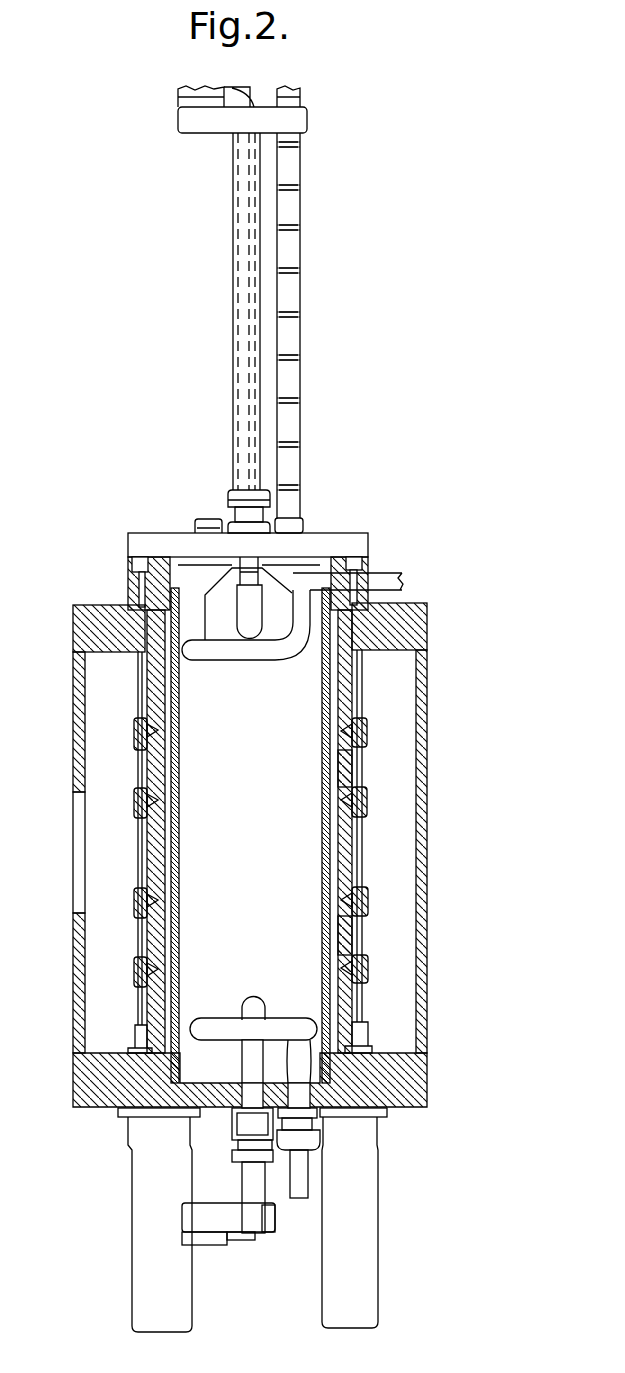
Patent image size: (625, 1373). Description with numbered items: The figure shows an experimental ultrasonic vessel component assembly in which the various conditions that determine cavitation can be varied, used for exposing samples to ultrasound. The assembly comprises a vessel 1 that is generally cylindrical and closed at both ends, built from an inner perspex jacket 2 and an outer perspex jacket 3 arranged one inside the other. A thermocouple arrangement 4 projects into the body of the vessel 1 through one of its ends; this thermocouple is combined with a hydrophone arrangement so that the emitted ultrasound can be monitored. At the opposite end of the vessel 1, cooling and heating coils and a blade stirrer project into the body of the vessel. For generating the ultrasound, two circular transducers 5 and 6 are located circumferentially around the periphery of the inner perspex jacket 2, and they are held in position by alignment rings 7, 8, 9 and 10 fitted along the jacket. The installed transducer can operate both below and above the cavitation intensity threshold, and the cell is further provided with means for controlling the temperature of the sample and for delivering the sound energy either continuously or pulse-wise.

The vessel 1 is at (409, 603).
The inner perspex jacket 2 is at (337, 749).
The outer perspex jacket 3 is at (428, 800).
The thermocouple arrangement 4 is at (237, 1128).
The circular transducer 5 is at (346, 762).
The circular transducer 6 is at (354, 937).
The alignment ring 7 is at (368, 729).
The alignment ring 8 is at (367, 806).
The alignment ring 9 is at (370, 900).
The alignment ring 10 is at (368, 968).